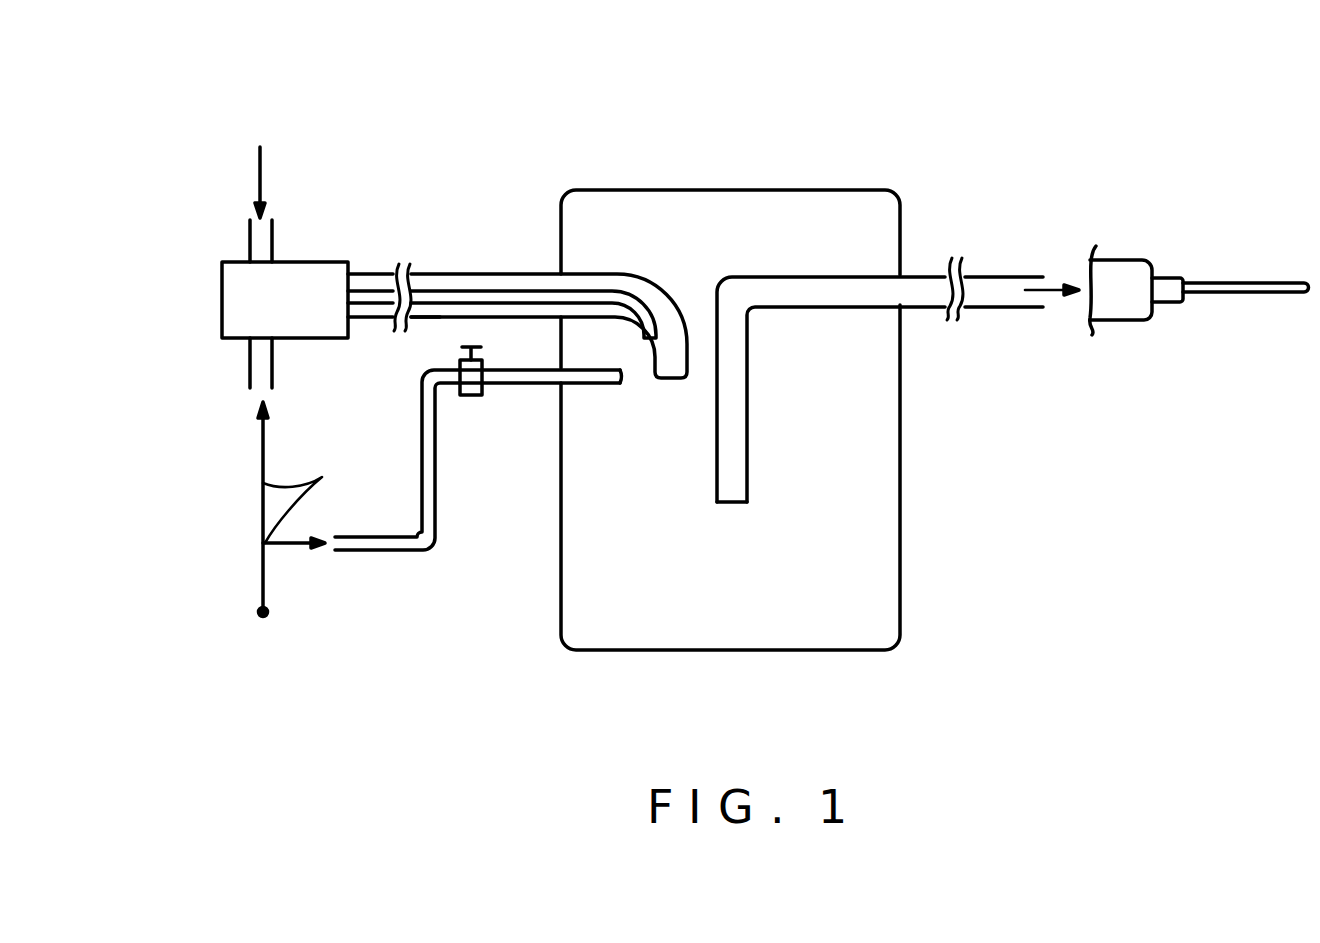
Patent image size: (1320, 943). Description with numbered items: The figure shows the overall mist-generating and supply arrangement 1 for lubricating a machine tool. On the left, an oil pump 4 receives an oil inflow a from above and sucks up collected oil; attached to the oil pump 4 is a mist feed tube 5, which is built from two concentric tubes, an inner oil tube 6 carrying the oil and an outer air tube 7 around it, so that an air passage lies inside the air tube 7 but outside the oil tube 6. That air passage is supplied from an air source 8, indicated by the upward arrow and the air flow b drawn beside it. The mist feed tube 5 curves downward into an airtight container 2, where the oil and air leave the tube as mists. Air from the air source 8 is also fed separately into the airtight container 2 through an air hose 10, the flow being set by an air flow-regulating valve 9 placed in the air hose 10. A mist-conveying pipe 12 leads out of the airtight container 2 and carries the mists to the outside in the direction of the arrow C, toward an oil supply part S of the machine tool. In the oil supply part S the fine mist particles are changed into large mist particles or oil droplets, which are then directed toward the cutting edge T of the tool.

The apparatus 1 is at (682, 106).
The airtight container 2 is at (768, 190).
The oil pump 4 is at (295, 278).
The mist feed tube 5 is at (510, 273).
The oil tube 6 is at (458, 282).
The air tube 7 is at (428, 318).
The air source 8 is at (291, 537).
The air flow-regulating valve 9 is at (475, 396).
The air hose 10 is at (535, 385).
The mist-conveying pipe 12 is at (987, 295).
The fluid a is at (260, 172).
The fluid b is at (310, 500).
The flow direction C is at (1048, 290).
The oil supply part S is at (1132, 307).
The cutting edge T is at (1232, 292).